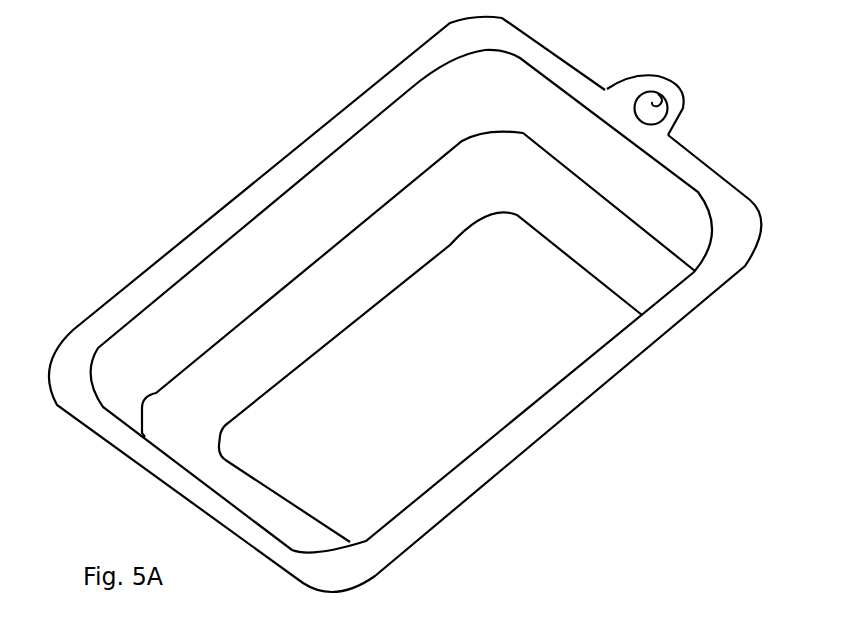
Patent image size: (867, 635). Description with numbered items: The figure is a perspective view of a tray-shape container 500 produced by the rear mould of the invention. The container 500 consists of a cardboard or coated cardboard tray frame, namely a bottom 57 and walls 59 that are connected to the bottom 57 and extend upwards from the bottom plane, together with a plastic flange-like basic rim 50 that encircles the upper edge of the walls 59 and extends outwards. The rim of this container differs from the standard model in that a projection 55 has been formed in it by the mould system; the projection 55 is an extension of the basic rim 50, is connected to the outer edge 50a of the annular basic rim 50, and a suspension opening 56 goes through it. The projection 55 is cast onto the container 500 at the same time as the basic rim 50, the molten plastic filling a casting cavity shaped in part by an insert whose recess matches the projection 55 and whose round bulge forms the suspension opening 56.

The tray-shape container 500 is at (165, 132).
The basic rim 50 is at (547, 408).
The outer edge of the basic rim 50a is at (162, 262).
The projection 55 is at (624, 94).
The suspension opening 56 is at (657, 103).
The bottom 57 is at (386, 366).
The walls 59 is at (352, 242).